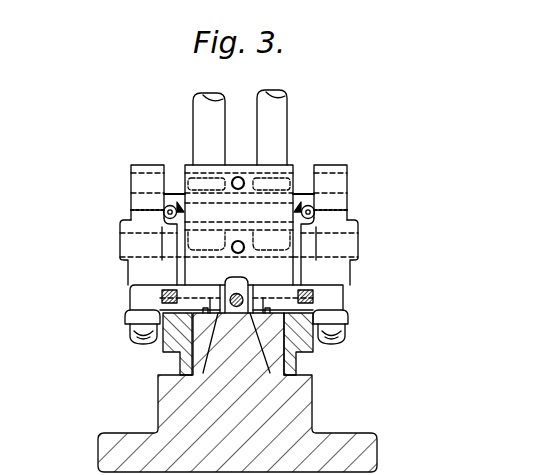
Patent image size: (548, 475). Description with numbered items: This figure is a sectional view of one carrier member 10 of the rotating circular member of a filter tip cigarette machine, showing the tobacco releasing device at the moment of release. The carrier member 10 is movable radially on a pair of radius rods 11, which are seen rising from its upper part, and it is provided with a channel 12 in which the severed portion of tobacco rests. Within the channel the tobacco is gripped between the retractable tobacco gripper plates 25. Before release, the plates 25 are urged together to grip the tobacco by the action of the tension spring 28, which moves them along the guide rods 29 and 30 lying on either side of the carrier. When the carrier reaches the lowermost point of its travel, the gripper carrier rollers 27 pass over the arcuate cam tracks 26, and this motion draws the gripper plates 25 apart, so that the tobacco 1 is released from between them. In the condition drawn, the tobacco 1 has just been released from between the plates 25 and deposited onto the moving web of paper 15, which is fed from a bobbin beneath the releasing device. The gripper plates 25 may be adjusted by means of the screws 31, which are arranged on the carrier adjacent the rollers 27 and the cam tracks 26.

The continuous rod of tobacco 1 is at (240, 281).
The carrier members 10 is at (183, 161).
The radius rods 11 is at (210, 125).
The channel 12 is at (236, 325).
The moving web of paper 15 is at (238, 393).
The retractable tobacco gripper plates 25 is at (220, 286).
The arcuate cam tracks 26 is at (164, 346).
The gripper carrier rollers 27 is at (127, 318).
The tension spring 28 is at (300, 208).
The guide rod 29 is at (304, 183).
The guide rod 30 is at (297, 247).
The screws 31 is at (163, 293).